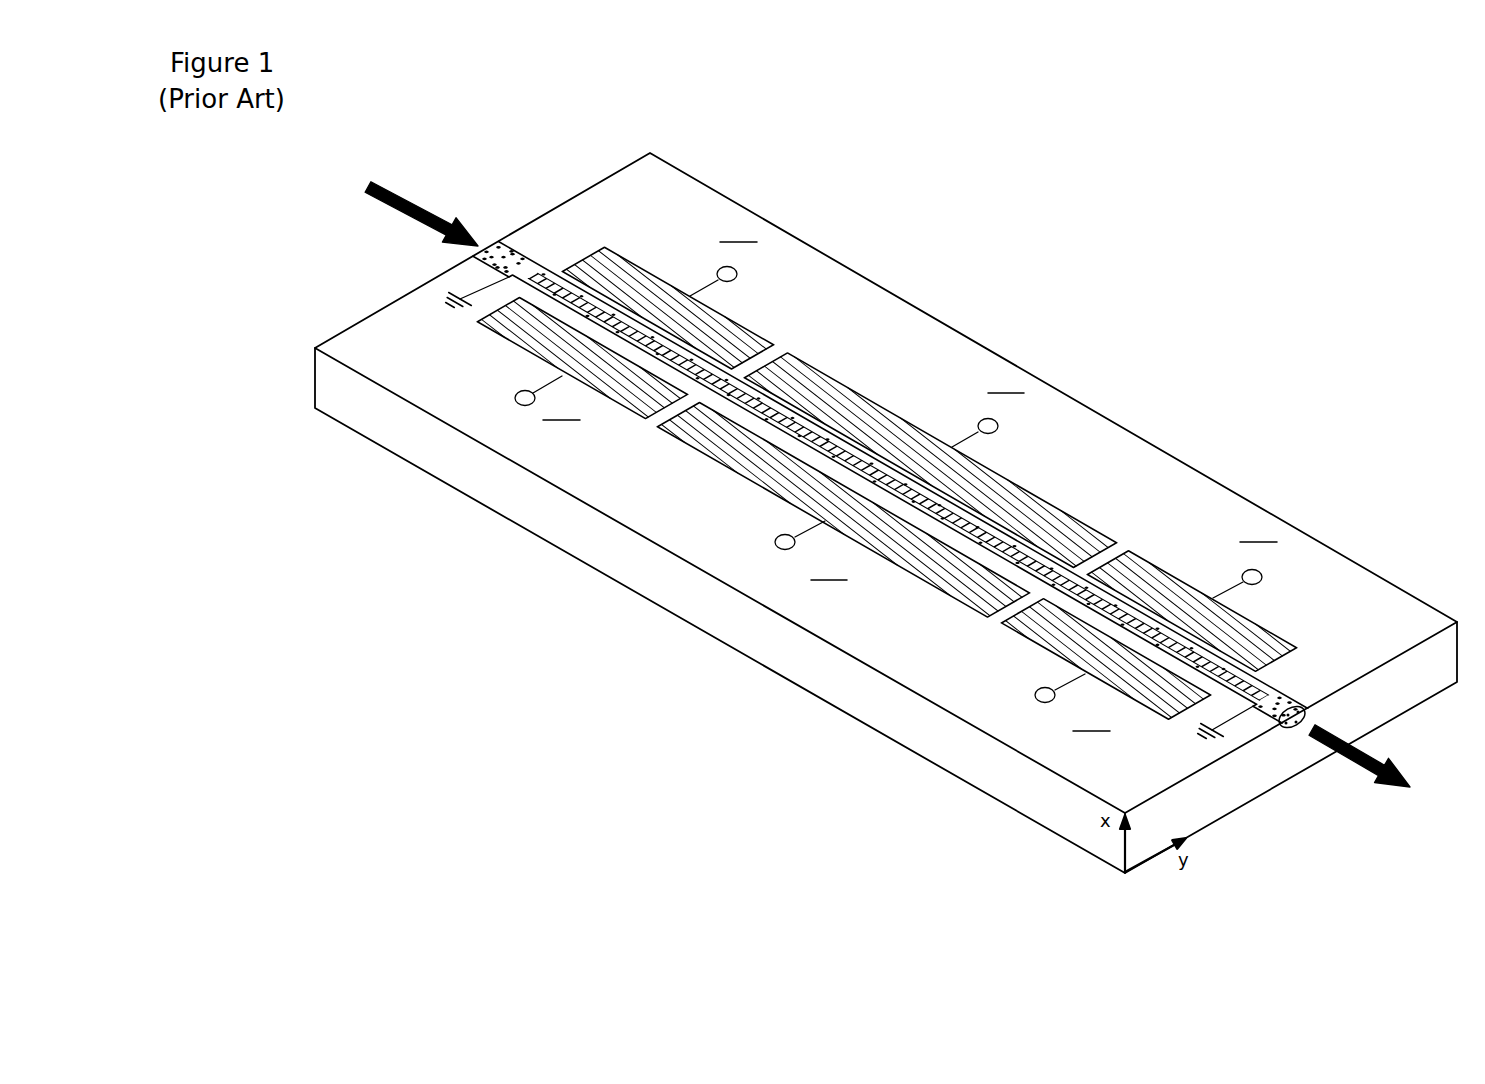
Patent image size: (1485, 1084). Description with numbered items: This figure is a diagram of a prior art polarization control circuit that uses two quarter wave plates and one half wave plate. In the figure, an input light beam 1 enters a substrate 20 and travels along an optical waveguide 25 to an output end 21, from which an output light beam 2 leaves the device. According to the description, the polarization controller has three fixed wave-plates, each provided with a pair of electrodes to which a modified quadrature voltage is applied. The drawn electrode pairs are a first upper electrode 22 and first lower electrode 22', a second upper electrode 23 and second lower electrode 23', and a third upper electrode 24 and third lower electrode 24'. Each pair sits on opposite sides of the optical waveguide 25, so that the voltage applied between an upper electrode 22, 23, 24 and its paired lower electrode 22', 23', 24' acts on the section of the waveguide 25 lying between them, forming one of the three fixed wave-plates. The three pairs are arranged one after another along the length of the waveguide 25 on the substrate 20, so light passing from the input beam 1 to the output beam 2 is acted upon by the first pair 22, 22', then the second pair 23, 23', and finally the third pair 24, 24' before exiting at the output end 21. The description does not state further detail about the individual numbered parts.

The input light beam 1 is at (404, 192).
The output light beam 2 is at (1350, 760).
The electro-optic substrate 20 is at (936, 738).
The waveguide output end 21 is at (1303, 698).
The first upper electrode 22 is at (685, 294).
The first lower electrode 22' is at (567, 371).
The second upper electrode 23 is at (933, 460).
The second lower electrode 23' is at (841, 509).
The third upper electrode 24 is at (1208, 594).
The third lower electrode 24' is at (1088, 679).
The optical waveguide 25 is at (548, 288).